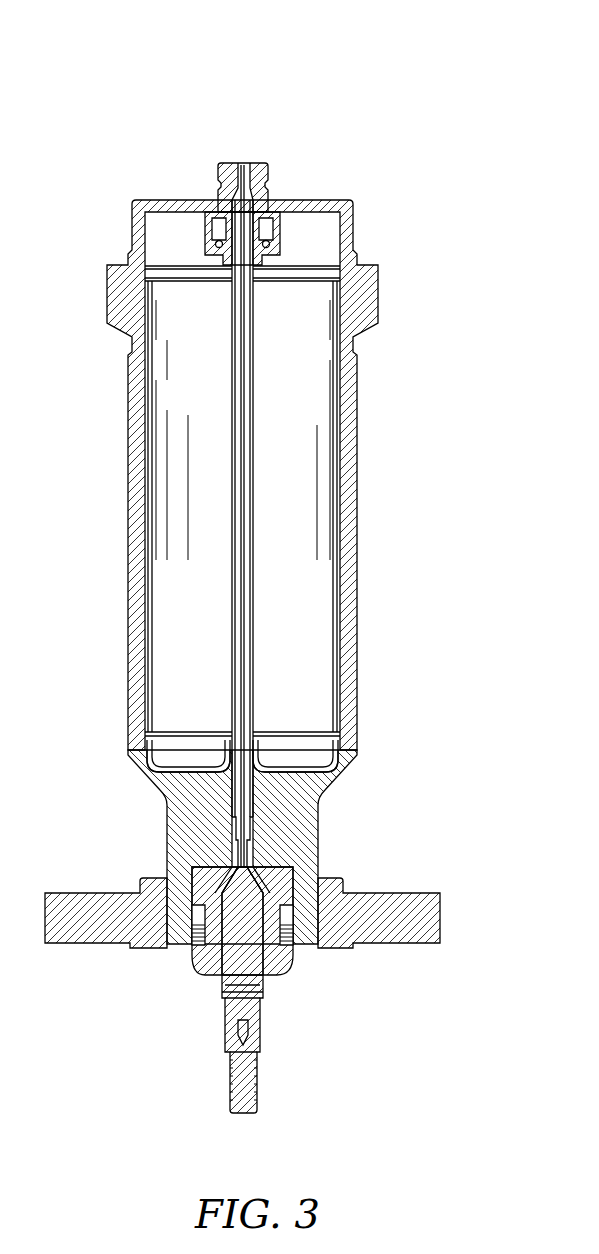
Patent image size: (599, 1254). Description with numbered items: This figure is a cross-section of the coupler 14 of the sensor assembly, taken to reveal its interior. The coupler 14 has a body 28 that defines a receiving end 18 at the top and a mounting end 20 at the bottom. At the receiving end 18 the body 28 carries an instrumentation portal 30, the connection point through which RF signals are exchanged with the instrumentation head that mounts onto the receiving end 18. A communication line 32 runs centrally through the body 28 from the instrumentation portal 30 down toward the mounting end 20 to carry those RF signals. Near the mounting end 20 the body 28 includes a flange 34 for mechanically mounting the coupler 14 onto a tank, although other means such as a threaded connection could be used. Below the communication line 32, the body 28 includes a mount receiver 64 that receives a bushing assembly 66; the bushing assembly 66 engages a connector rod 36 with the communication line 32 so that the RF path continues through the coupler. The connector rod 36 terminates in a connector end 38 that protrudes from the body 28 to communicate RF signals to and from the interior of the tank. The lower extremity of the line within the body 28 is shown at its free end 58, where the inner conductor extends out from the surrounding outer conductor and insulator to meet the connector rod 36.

The coupler 14 is at (392, 183).
The receiving end 18 is at (372, 258).
The mounting end 20 is at (398, 822).
The body 28 is at (370, 408).
The instrumentation portal 30 is at (262, 160).
The communication line 32 is at (255, 495).
The flange 34 is at (410, 920).
The connector rod 36 is at (255, 885).
The connector end 38 is at (262, 1085).
The free end 58 is at (233, 858).
The mount receiver 64 is at (300, 810).
The bushing assembly 66 is at (205, 970).